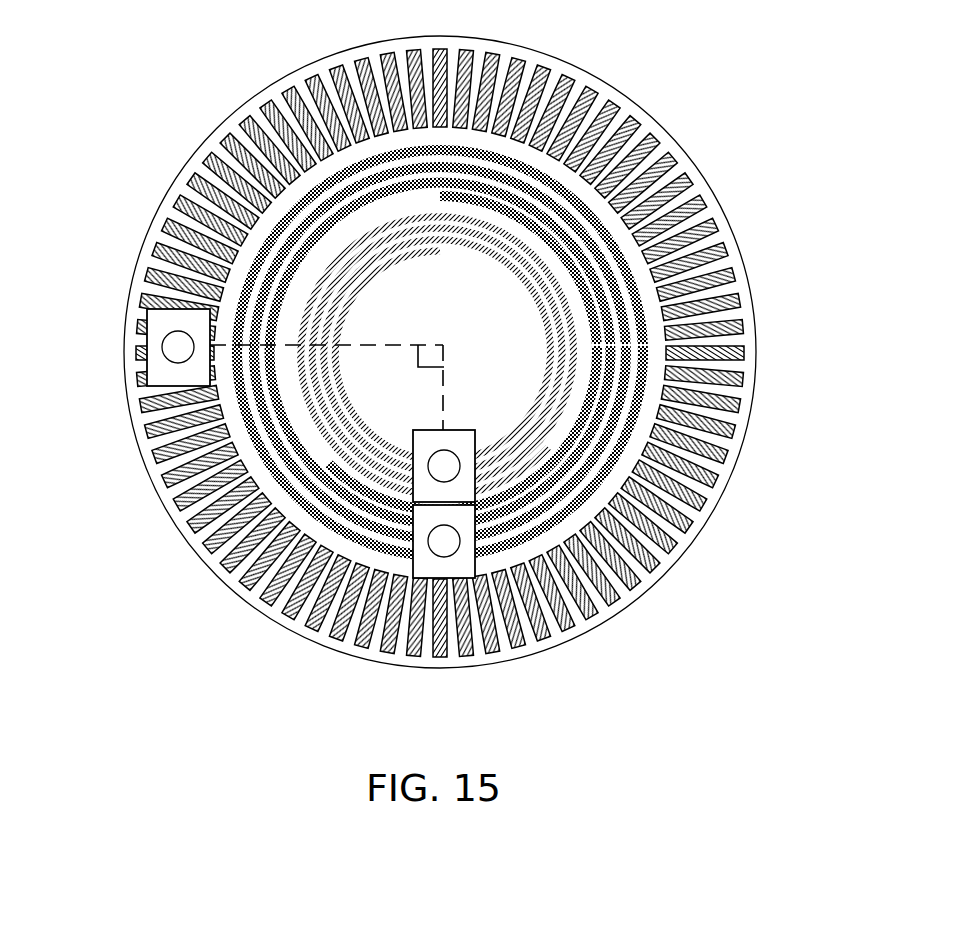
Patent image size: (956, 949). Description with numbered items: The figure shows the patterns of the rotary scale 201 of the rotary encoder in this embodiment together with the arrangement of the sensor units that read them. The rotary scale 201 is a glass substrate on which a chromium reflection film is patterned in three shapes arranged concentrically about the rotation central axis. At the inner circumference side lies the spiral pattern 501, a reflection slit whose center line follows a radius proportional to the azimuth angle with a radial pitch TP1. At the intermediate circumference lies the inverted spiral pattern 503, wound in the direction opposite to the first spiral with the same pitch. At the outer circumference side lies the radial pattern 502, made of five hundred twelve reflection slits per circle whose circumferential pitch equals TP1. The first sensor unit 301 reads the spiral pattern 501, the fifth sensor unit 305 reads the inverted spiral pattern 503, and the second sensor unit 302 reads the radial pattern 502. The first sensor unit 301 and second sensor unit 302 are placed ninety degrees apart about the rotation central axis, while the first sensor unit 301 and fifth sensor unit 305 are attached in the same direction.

The rotary scale 201 is at (217, 130).
The first sensor unit 301 is at (417, 430).
The second sensor unit 302 is at (146, 353).
The fifth sensor unit 305 is at (472, 580).
The spiral pattern 501 is at (392, 260).
The radial pattern 502 is at (730, 245).
The inverted spiral pattern 503 is at (560, 185).